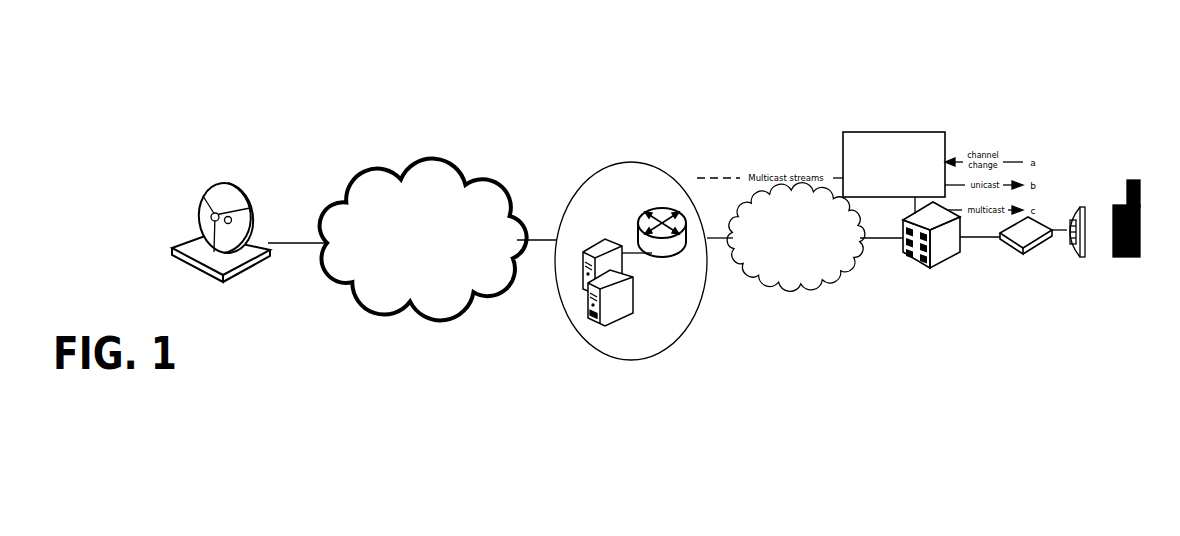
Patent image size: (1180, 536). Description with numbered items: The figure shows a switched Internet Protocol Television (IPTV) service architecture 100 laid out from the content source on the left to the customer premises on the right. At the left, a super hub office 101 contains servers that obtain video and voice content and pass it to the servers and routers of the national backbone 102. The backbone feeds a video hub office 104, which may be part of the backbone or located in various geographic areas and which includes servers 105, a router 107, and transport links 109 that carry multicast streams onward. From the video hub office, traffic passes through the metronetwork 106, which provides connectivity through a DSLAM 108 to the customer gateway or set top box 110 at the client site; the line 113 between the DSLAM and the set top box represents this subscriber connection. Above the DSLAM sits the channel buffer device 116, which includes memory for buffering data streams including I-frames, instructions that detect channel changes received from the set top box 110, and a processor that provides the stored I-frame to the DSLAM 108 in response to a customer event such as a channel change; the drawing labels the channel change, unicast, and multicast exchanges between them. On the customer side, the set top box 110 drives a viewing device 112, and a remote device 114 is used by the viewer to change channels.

The IPTV service architecture 100 is at (300, 425).
The super hub office 101 is at (247, 188).
The national backbone 102 is at (370, 302).
The video hub office 104 is at (635, 358).
The servers 105 is at (593, 313).
The metronetwork 106 is at (840, 278).
The router 107 is at (677, 217).
The DSLAM 108 is at (935, 267).
The transport links 109 is at (540, 240).
The set top box 110 is at (1040, 218).
The viewing device 112 is at (1072, 257).
The subscriber line 113 is at (977, 238).
The remote device 114 is at (1127, 257).
The channel buffer device 116 is at (903, 130).